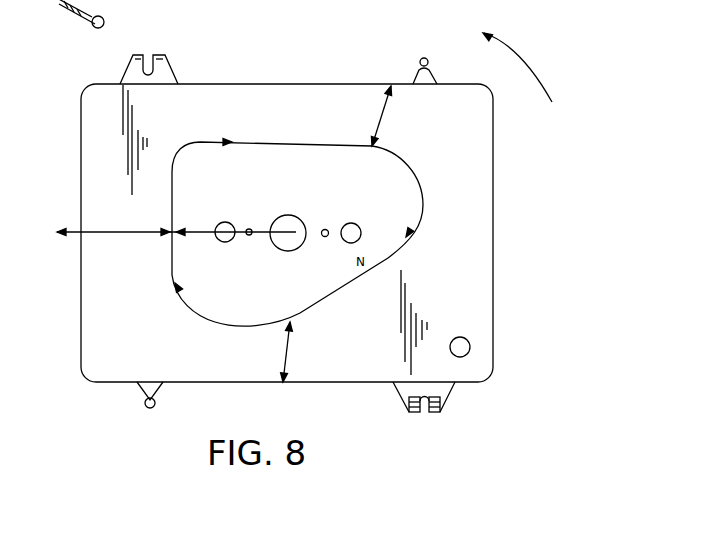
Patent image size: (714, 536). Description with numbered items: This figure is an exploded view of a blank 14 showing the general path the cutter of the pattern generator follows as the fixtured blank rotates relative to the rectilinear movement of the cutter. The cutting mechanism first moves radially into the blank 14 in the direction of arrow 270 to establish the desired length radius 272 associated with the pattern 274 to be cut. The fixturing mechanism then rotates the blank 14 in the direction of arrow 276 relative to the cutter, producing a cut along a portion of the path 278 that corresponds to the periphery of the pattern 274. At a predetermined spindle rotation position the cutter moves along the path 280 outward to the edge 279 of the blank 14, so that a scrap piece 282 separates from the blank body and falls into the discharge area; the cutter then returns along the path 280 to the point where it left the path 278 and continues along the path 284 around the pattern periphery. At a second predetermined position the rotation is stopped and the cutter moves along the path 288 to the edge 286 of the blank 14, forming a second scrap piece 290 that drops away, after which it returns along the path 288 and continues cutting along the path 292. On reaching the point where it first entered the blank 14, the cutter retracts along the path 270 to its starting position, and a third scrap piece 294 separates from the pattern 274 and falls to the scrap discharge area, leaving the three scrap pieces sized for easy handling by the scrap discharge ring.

The blank 14 is at (282, 76).
The arrow indicating radial cutting direction 270 is at (121, 236).
The length radius 272 is at (203, 237).
The pattern 274 is at (297, 233).
The arrow indicating blank rotation direction 276 is at (505, 46).
The first peripheral cutting path 278 is at (306, 140).
The edge of the blank 279 is at (364, 83).
The first outward cutting path 280 is at (382, 117).
The first scrap piece 282 is at (104, 147).
The second peripheral cutting path 284 is at (390, 258).
The edge of the blank 286 is at (250, 383).
The second outward cutting path 288 is at (293, 344).
The second scrap piece 290 is at (478, 218).
The third peripheral cutting path 292 is at (206, 319).
The third scrap piece 294 is at (105, 329).